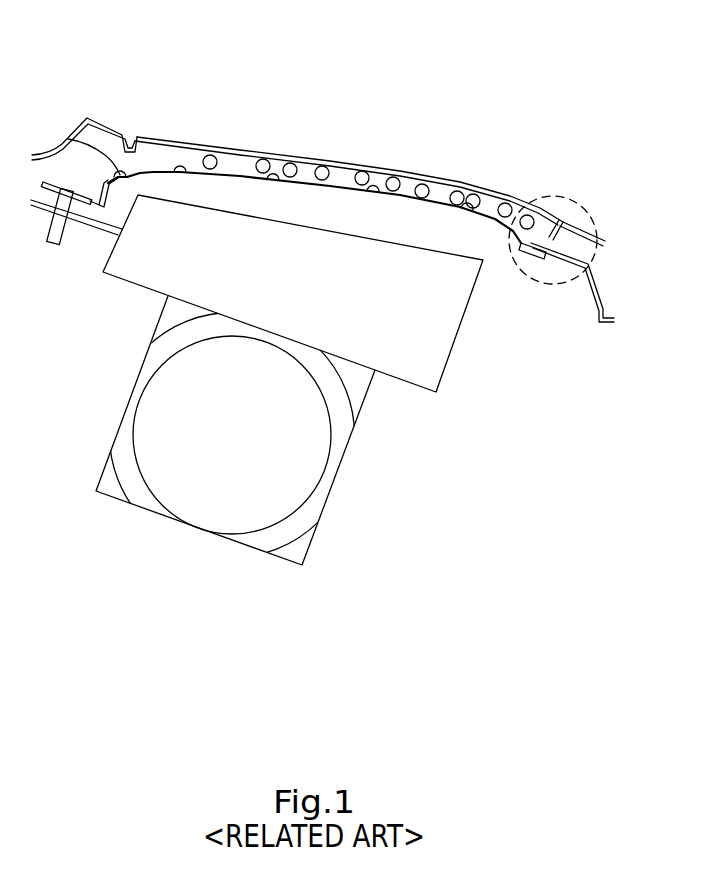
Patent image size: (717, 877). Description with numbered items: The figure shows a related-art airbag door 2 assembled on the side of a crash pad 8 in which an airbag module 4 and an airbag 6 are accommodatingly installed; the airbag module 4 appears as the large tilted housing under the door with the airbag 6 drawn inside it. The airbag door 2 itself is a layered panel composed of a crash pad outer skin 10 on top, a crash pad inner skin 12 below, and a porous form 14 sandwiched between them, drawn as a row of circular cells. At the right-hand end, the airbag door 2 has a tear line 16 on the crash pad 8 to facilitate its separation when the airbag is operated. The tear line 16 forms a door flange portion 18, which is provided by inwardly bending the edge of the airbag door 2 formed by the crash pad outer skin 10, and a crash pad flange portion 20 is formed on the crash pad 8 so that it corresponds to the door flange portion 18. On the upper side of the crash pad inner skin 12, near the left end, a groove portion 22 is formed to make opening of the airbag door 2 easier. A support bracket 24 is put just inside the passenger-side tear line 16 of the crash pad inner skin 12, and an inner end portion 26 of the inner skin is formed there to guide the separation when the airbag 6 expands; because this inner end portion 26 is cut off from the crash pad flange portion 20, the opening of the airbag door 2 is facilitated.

The airbag door 2 is at (342, 194).
The airbag module 4 is at (352, 487).
The airbag 6 is at (437, 337).
The crash pad 8 is at (106, 116).
The crash pad outer skin 10 is at (323, 157).
The crash pad inner skin 12 is at (491, 220).
The porous form 14 is at (262, 158).
The tear line 16 is at (593, 224).
The door flange portion 18 is at (547, 217).
The crash pad flange portion 20 is at (590, 262).
The groove portion 22 is at (68, 139).
The support bracket 24 is at (556, 258).
The inner end portion 26 is at (544, 215).